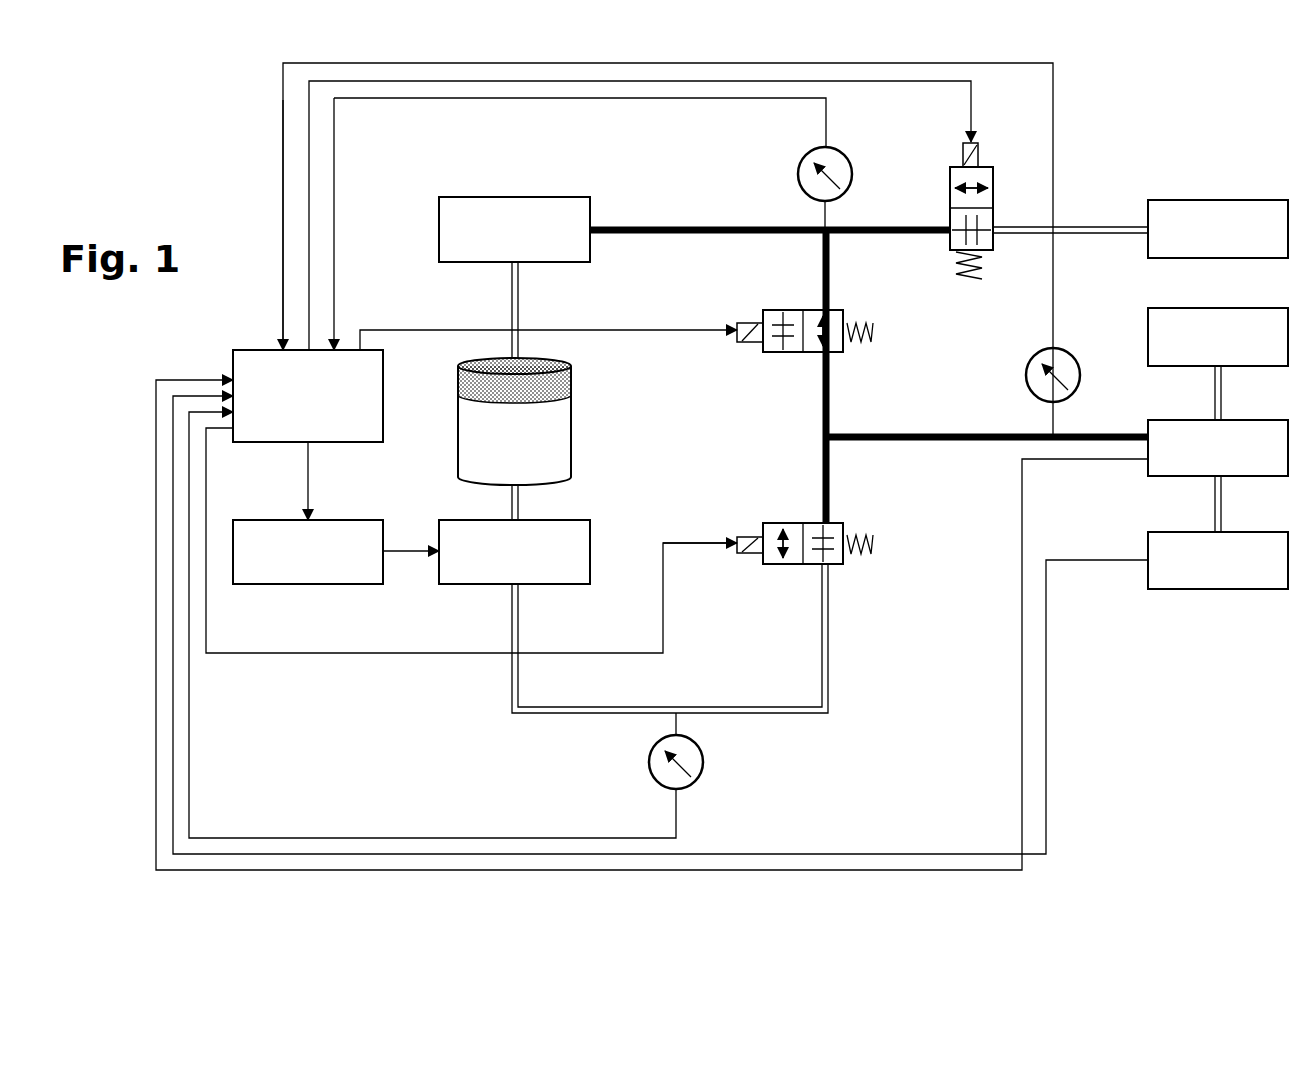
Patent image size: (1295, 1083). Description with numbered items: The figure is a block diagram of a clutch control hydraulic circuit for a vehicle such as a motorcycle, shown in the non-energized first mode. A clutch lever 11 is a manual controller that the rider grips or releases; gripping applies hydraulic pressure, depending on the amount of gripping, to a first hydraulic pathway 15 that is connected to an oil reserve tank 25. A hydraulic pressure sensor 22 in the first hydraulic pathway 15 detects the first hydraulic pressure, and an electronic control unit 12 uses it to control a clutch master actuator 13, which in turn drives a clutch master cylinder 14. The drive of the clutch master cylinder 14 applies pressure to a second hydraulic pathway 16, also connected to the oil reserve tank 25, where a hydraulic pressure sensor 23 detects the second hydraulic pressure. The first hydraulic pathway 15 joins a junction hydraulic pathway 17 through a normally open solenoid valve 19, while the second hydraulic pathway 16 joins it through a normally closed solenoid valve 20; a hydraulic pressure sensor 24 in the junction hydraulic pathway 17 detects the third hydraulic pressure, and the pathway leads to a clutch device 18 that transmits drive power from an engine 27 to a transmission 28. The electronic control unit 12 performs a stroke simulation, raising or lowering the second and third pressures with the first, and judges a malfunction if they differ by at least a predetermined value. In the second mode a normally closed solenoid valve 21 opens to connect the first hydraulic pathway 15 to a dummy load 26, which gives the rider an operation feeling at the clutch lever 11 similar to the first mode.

The clutch lever 11 is at (552, 197).
The electronic control unit 12 is at (256, 348).
The clutch master actuator 13 is at (358, 520).
The clutch master cylinder 14 is at (592, 538).
The first hydraulic pathway 15 is at (712, 227).
The second hydraulic pathway 16 is at (761, 707).
The junction hydraulic pathway 17 is at (947, 434).
The clutch device 18 is at (1258, 420).
The solenoid valve 19 is at (772, 310).
The solenoid valve 20 is at (772, 523).
The solenoid valve 21 is at (950, 175).
The hydraulic pressure sensor 22 is at (801, 160).
The hydraulic pressure sensor 23 is at (651, 752).
The hydraulic pressure sensor 24 is at (1026, 360).
The oil reserve tank 25 is at (573, 382).
The dummy load 26 is at (1258, 200).
The engine 27 is at (1258, 308).
The transmission 28 is at (1258, 532).